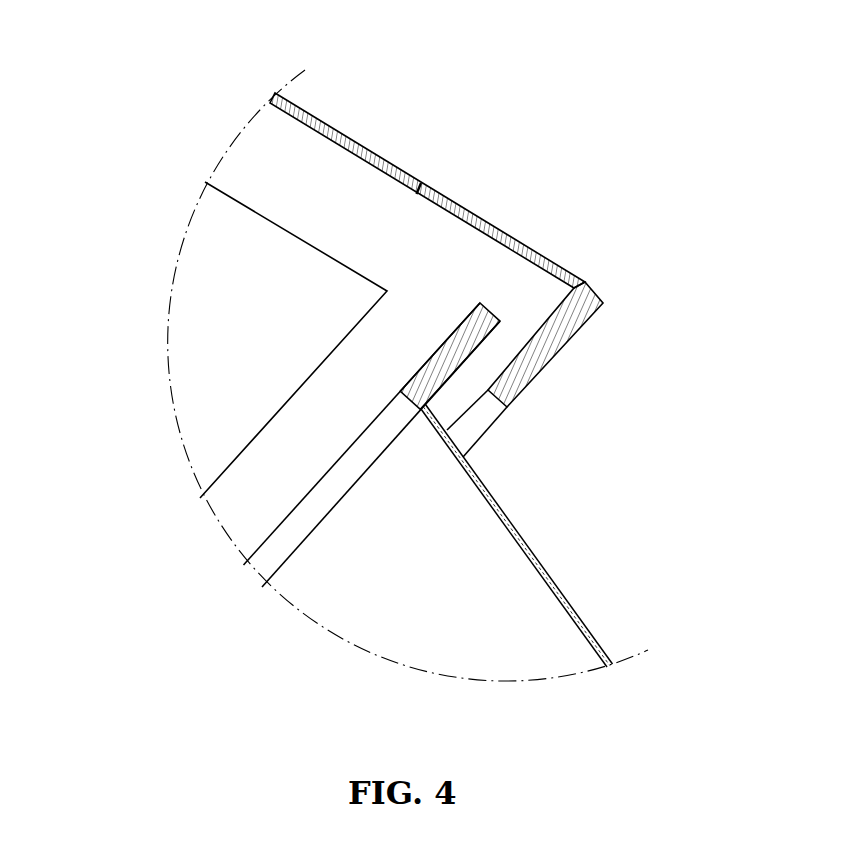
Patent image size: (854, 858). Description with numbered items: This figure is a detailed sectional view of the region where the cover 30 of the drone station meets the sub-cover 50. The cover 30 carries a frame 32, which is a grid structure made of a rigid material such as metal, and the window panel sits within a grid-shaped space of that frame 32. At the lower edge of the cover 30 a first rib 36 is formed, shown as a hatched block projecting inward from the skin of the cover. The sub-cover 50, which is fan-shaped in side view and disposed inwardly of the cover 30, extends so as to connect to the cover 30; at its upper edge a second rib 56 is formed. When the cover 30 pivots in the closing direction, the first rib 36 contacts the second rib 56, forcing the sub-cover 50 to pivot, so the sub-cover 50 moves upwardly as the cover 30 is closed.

The cover 30 is at (460, 250).
The frame 32 is at (427, 190).
The first rib 36 is at (548, 345).
The sub-cover 50 is at (582, 597).
The second rib 56 is at (443, 348).